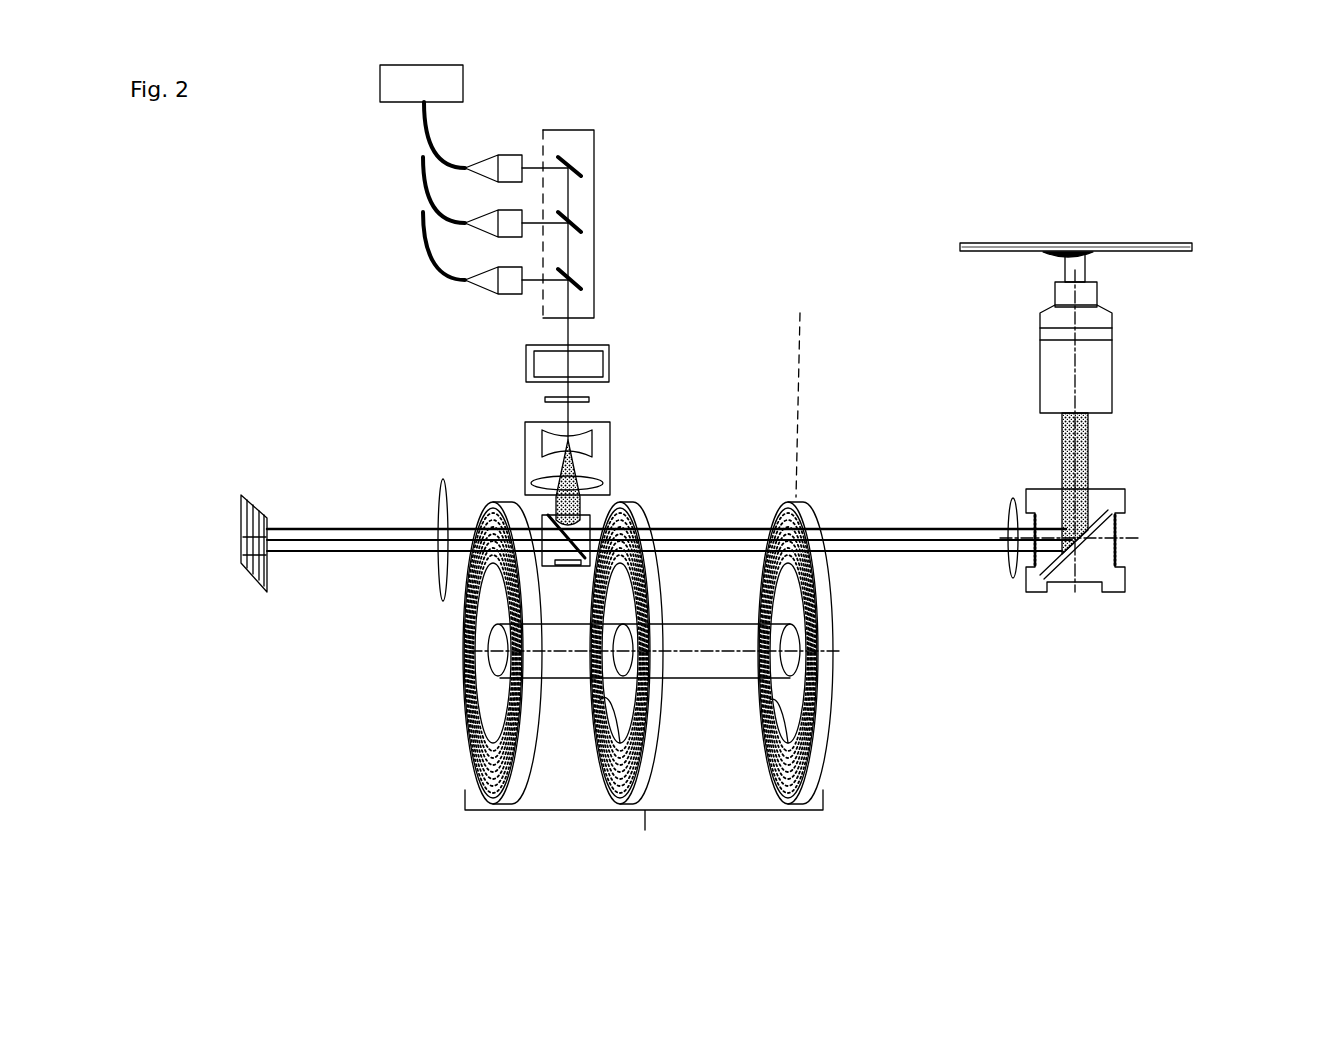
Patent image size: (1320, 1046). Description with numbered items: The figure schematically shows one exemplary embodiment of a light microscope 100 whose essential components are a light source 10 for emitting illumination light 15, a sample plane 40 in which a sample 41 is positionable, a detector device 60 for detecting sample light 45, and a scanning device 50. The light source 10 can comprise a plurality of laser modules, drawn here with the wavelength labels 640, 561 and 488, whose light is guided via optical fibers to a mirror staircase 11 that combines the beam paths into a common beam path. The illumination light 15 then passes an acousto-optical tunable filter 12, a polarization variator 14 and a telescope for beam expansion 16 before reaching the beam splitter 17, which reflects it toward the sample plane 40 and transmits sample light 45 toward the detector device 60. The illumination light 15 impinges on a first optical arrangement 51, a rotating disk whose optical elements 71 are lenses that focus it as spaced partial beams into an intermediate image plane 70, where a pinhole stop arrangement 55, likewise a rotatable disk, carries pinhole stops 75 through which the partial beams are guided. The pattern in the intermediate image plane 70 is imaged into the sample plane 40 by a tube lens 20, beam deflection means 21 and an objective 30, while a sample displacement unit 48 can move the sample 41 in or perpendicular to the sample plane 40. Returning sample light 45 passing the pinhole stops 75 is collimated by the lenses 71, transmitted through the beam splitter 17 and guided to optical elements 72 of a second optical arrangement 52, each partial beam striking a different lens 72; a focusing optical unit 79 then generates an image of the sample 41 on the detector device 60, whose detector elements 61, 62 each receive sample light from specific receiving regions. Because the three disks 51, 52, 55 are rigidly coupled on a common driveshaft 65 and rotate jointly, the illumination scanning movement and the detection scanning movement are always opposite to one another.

The light microscope 100 is at (858, 157).
The light source 10 is at (436, 96).
The mirror staircase 11 is at (540, 128).
The laser 640 nm 640 is at (483, 142).
The laser 561 nm 561 is at (483, 197).
The laser 488 nm 488 is at (483, 253).
The acousto-optical tunable filter 12 is at (526, 362).
The polarization variator 14 is at (545, 399).
The illumination light 15 is at (568, 326).
The telescope for beam expansion 16 is at (525, 440).
The beam splitter 17 is at (548, 516).
The sample light 45 is at (333, 528).
The detector device 60 is at (238, 495).
The detector element 61 is at (245, 541).
The detector element 62 is at (245, 560).
The focusing optical unit 79 is at (440, 490).
The scanning device 50 is at (644, 825).
The common driveshaft 65 is at (712, 680).
The second optical arrangement 52 is at (464, 743).
The optical element 72 is at (468, 637).
The first optical arrangement 51 is at (638, 500).
The optical element 71 is at (598, 778).
The pinhole stop arrangement 55 is at (798, 496).
The pinhole stop 75 is at (772, 780).
The intermediate image plane 70 is at (800, 345).
The tube lens 20 is at (1010, 505).
The beam deflection means 21 is at (1108, 490).
The objective 30 is at (1022, 365).
The sample plane 40 is at (1198, 246).
The sample displacement unit 48 is at (1198, 248).
The sample 41 is at (1045, 255).